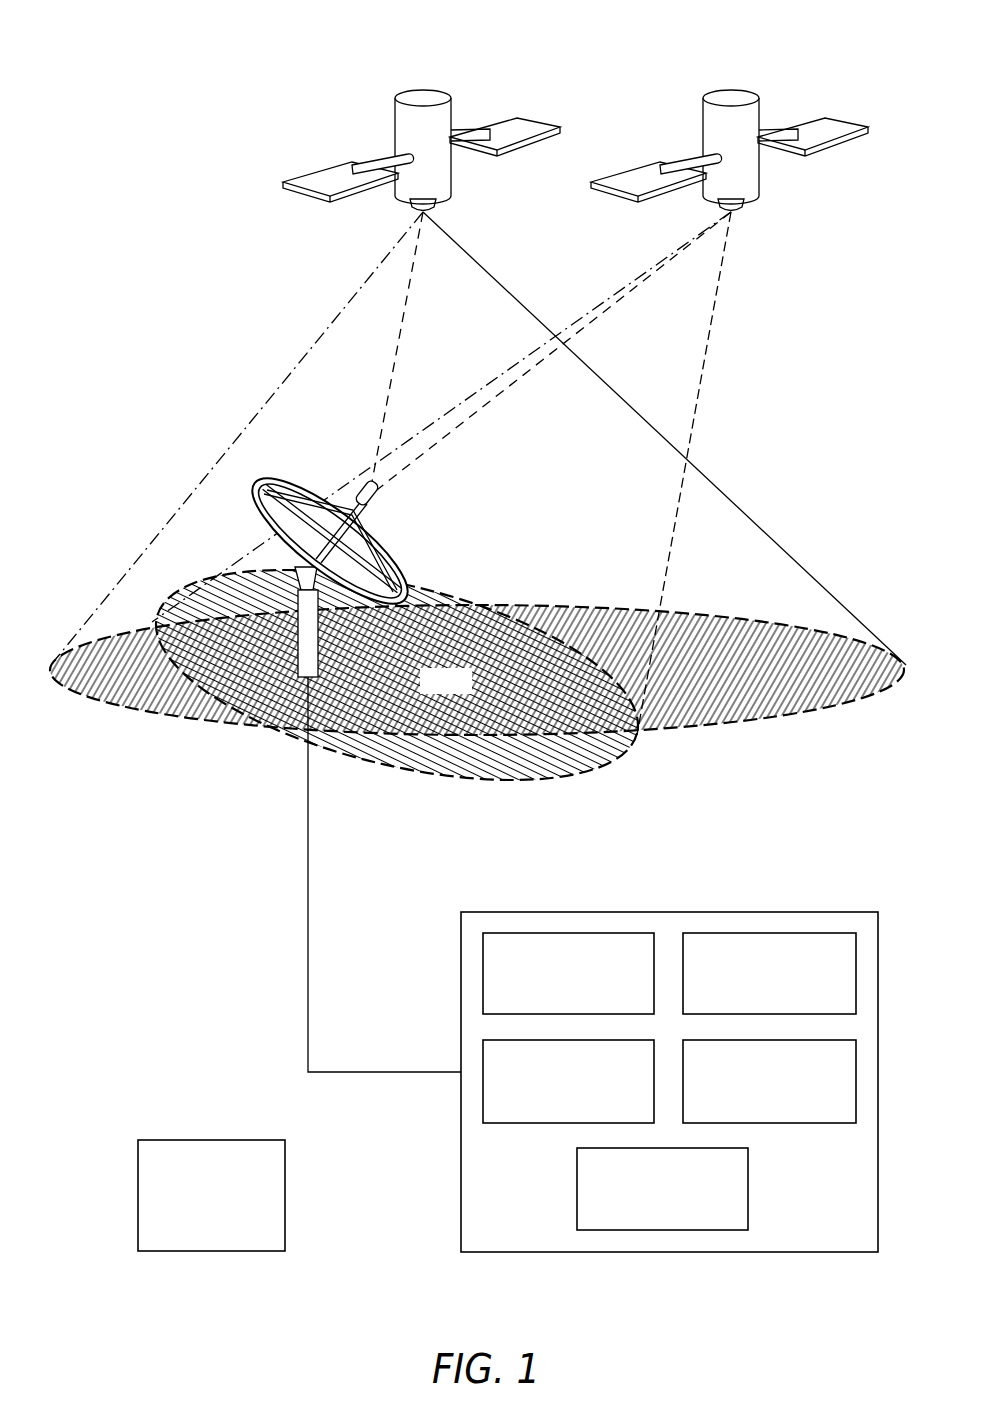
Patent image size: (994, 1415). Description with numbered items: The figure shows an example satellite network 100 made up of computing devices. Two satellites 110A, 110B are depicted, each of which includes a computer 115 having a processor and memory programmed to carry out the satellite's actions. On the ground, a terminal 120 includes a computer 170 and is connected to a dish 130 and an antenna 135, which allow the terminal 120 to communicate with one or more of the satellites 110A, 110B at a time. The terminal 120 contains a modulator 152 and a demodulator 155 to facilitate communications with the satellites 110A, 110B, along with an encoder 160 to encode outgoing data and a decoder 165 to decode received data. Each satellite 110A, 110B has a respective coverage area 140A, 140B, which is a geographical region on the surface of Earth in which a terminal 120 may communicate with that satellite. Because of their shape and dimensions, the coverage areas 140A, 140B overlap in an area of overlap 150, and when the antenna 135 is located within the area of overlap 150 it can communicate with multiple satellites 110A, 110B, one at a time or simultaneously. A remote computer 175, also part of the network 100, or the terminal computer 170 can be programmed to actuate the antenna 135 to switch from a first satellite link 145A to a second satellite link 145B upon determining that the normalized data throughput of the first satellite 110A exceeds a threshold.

The satellite network 100 is at (138, 105).
The first satellite 110A is at (423, 88).
The second satellite 110B is at (731, 88).
The computer 115 is at (428, 139).
The terminal 120 is at (499, 912).
The dish 130 is at (256, 508).
The antenna 135 is at (378, 505).
The first coverage area 140A is at (177, 727).
The second coverage area 140B is at (612, 770).
The first satellite link 145A is at (399, 343).
The second satellite link 145B is at (590, 323).
The area of overlap 150 is at (446, 695).
The modulator 152 is at (574, 999).
The demodulator 155 is at (775, 999).
The encoder 160 is at (574, 1106).
The decoder 165 is at (775, 1106).
The computer 170 is at (668, 1213).
The remote computer 175 is at (217, 1235).